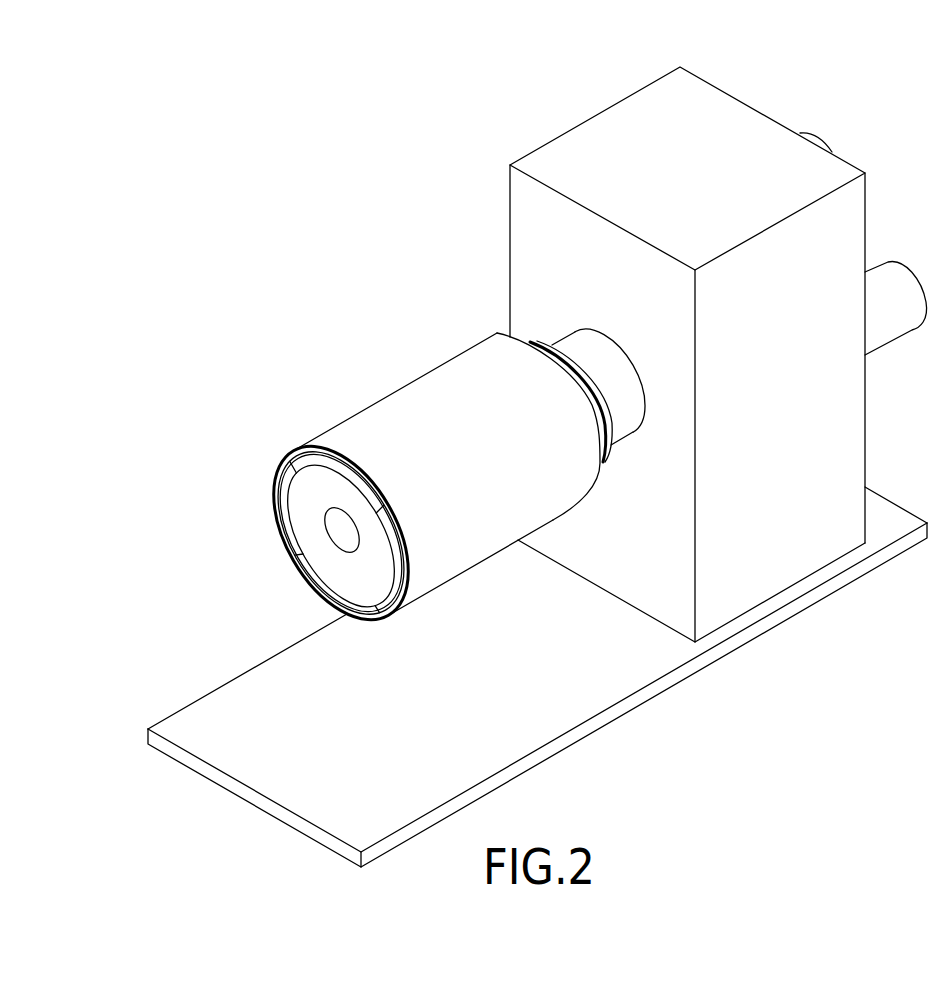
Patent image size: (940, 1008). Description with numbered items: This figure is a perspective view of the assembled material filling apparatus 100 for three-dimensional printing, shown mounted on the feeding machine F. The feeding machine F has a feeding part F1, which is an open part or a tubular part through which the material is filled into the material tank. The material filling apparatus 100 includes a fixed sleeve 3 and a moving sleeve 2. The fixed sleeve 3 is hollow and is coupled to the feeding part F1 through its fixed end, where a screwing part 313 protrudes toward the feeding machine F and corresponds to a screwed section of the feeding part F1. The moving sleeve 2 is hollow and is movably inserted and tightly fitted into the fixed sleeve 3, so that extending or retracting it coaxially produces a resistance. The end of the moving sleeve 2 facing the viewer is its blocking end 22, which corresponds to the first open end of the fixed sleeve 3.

The material filling apparatus 100 is at (440, 446).
The moving sleeve 2 is at (315, 533).
The blocking end 22 is at (317, 557).
The fixed sleeve 3 is at (348, 420).
The screwing part 313 is at (598, 421).
The feeding machine F is at (767, 103).
The feeding part F1 is at (577, 337).